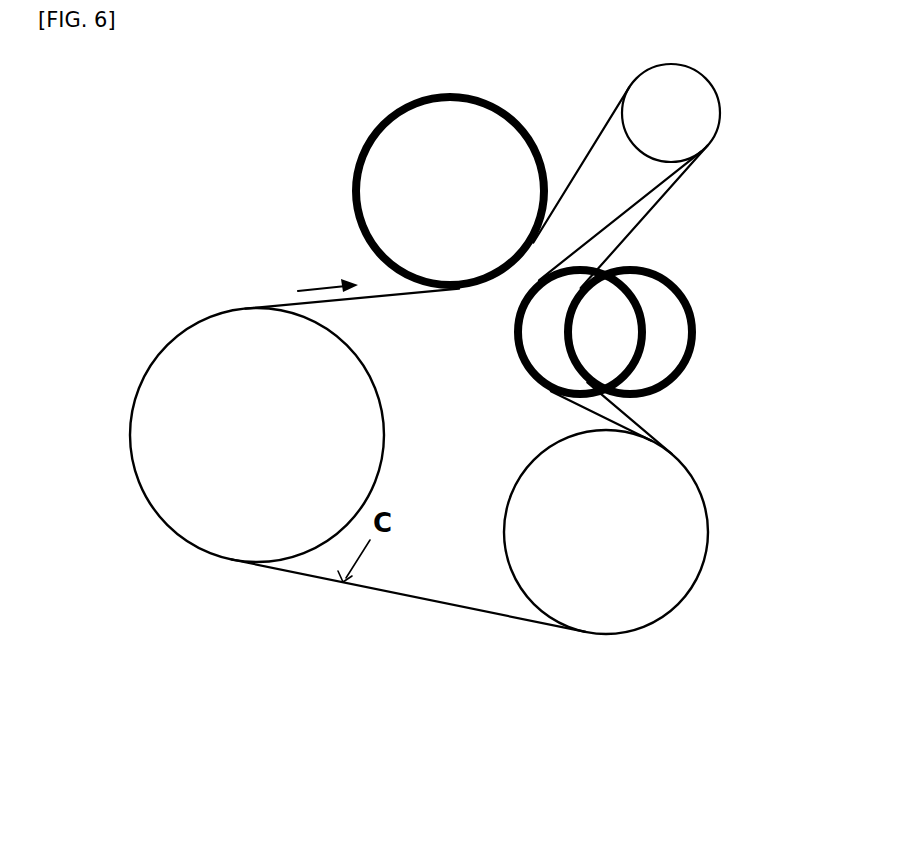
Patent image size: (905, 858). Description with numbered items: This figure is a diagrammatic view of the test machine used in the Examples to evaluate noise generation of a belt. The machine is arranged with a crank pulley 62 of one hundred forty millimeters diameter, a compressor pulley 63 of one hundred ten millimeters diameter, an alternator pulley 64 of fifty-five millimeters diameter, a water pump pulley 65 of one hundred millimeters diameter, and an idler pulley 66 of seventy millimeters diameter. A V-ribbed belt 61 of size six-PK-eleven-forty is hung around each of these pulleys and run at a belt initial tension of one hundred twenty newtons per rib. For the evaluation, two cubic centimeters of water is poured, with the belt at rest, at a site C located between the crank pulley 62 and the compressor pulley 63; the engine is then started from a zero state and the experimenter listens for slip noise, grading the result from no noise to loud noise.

The V-ribbed belt 61 is at (397, 590).
The crank pulley 62 is at (170, 450).
The compressor pulley 63 is at (668, 582).
The alternator pulley 64 is at (696, 93).
The water pump pulley 65 is at (418, 148).
The idler pulley 66 is at (672, 333).